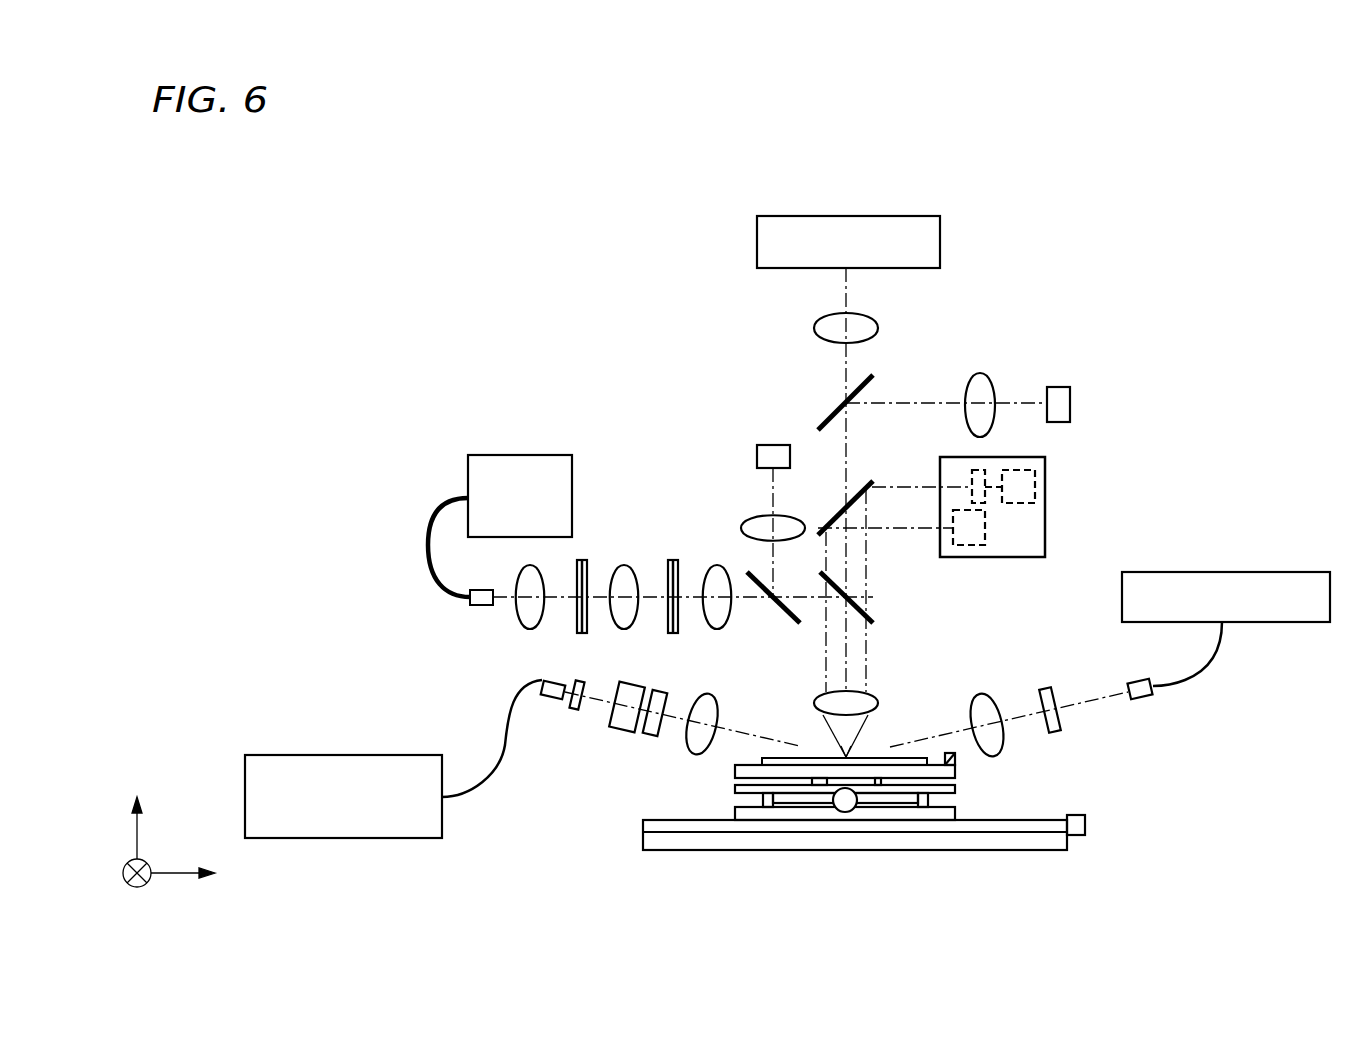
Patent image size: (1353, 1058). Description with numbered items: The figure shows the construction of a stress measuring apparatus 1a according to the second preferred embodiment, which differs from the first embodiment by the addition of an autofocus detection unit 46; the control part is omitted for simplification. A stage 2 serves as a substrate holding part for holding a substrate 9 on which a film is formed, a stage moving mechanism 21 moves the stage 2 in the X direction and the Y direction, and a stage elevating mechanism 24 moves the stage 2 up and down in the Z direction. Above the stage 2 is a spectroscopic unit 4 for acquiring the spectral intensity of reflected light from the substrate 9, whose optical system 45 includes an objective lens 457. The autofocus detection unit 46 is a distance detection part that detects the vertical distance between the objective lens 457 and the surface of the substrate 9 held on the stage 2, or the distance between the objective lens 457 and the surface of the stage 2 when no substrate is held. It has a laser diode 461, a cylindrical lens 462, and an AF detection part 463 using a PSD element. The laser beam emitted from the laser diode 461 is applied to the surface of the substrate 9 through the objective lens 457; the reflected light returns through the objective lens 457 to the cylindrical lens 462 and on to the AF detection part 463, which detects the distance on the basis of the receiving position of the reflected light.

The stress measuring apparatus 1a is at (533, 277).
The spectroscopic unit 4 is at (668, 408).
The optical system 45 is at (720, 545).
The objective lens 457 is at (870, 688).
The autofocus detection unit 46 is at (1045, 498).
The laser diode 461 is at (985, 530).
The cylindrical lens 462 is at (990, 500).
The AF detection part 463 is at (1036, 475).
The stage 2 is at (750, 765).
The substrate 9 is at (786, 758).
The stage elevating mechanism 24 is at (827, 782).
The stage moving mechanism 21 is at (865, 857).